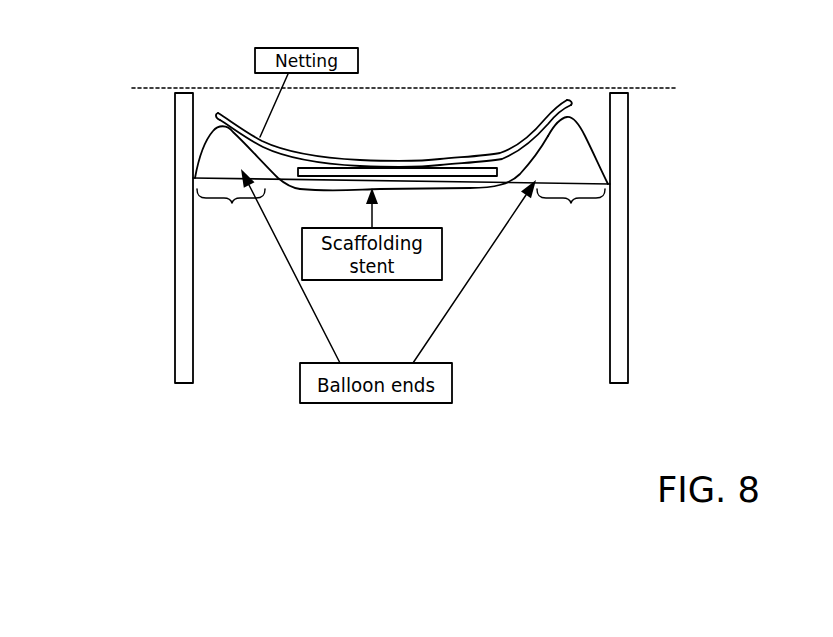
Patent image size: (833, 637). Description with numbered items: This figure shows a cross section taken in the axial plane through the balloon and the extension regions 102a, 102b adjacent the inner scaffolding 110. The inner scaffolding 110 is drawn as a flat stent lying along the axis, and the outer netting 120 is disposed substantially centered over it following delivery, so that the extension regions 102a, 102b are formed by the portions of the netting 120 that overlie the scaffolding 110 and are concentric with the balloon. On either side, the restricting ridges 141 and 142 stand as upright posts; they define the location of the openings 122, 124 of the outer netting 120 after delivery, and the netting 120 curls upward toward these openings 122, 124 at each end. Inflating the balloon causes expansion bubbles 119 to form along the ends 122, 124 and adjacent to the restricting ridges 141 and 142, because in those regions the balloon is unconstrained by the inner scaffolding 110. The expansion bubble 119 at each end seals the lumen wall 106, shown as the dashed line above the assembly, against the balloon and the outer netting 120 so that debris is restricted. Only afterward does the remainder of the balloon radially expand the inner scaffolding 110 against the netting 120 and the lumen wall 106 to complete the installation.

The lumen wall 106 is at (152, 88).
The inner scaffolding 110 is at (470, 180).
The expansion bubble 119 is at (211, 129).
The outer netting 120 is at (539, 124).
The opening 122 is at (566, 77).
The opening 124 is at (224, 78).
The extension region 102a is at (571, 203).
The extension region 102b is at (232, 203).
The restricting ridge 141 is at (619, 383).
The restricting ridge 142 is at (184, 383).